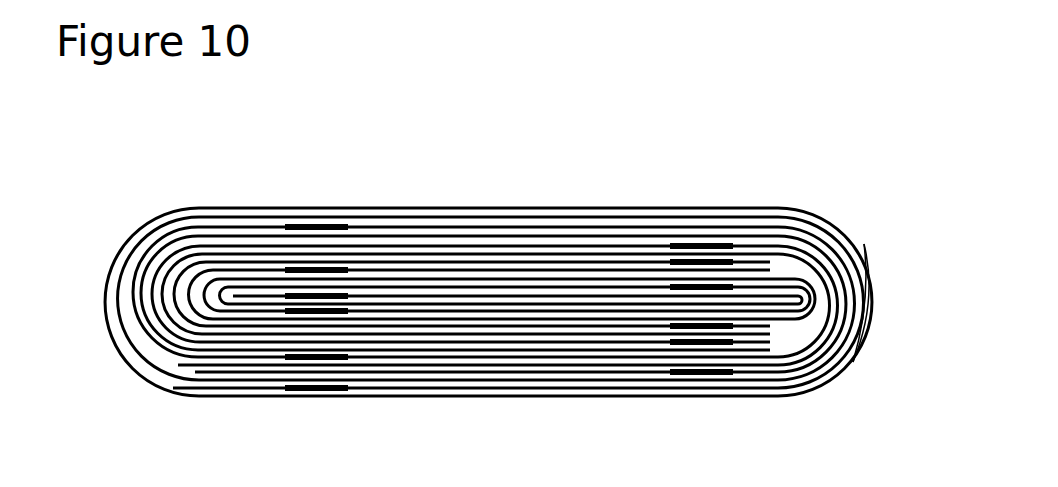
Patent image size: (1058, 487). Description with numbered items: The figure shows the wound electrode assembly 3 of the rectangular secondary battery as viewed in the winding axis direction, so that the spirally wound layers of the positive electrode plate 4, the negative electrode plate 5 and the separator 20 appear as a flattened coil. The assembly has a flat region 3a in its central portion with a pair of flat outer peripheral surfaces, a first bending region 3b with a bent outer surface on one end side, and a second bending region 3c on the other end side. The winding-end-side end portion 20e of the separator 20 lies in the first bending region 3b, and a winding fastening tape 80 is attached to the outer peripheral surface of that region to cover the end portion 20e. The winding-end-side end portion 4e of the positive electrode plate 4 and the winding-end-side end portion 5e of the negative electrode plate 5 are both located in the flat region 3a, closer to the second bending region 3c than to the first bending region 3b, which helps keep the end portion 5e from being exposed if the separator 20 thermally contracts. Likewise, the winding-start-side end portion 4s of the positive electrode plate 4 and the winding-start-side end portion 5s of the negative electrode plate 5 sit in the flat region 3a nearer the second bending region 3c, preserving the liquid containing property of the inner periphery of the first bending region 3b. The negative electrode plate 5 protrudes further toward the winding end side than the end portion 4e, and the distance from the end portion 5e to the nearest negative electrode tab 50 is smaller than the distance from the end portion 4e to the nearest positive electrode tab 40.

The wound electrode assembly 3 is at (101, 142).
The flat region 3a is at (455, 200).
The first bending region 3b is at (852, 335).
The second bending region 3c is at (103, 243).
The positive electrode plate 4 is at (420, 245).
The winding-end-side end portion of the positive electrode plate 4e is at (203, 388).
The winding-start-side end portion of the positive electrode plate 4s is at (250, 232).
The negative electrode plate 5 is at (587, 235).
The winding-end-side end portion of the negative electrode plate 5e is at (172, 383).
The winding-start-side end portion of the negative electrode plate 5s is at (192, 233).
The separator 20 is at (382, 240).
The winding-end-side end portion of the separator 20e is at (855, 235).
The positive electrode tab 40 is at (748, 242).
The negative electrode tab 50 is at (318, 385).
The winding fastening tape 80 is at (866, 270).